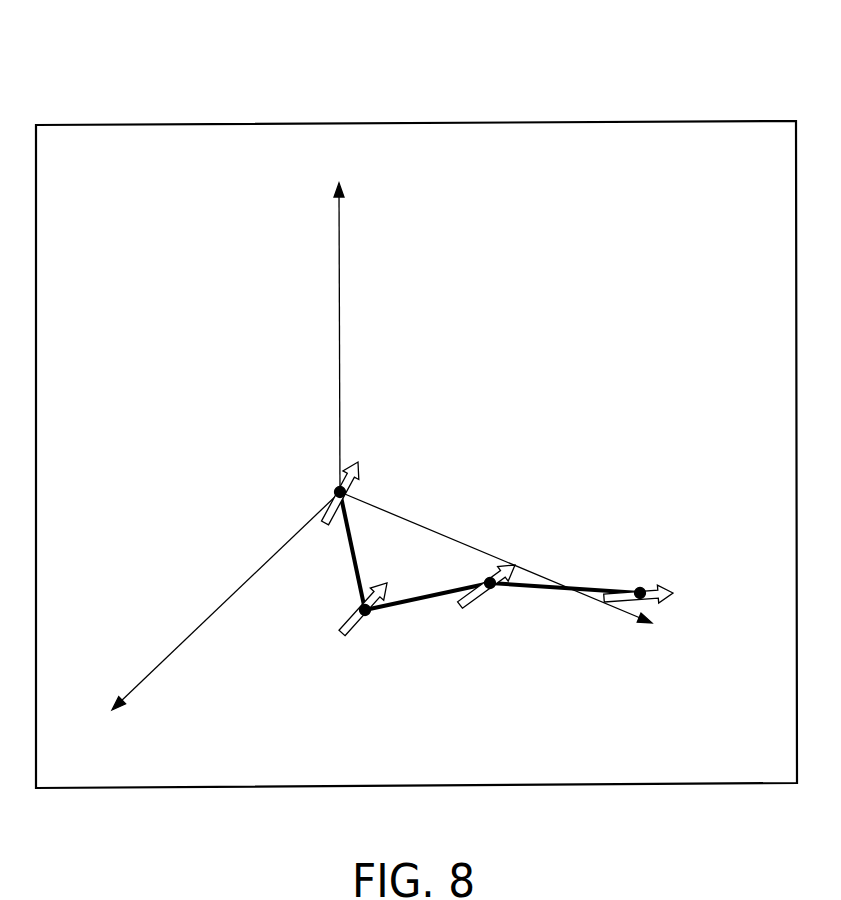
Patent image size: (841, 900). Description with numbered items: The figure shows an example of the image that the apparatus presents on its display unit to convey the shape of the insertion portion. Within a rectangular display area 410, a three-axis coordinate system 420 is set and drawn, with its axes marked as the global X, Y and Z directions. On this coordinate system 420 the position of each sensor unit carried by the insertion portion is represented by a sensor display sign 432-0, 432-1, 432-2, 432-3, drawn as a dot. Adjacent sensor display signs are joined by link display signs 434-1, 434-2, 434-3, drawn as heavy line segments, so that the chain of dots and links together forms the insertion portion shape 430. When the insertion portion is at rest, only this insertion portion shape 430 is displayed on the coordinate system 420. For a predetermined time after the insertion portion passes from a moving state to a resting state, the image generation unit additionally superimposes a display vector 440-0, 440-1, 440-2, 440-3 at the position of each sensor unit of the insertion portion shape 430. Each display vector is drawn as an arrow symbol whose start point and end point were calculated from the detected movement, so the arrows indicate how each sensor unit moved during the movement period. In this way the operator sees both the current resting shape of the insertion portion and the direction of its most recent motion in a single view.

The display area 410 is at (726, 100).
The coordinate system 420 is at (658, 290).
The insertion portion shape 430 is at (453, 604).
The sensor display sign 432-0 is at (334, 490).
The sensor display sign 432-1 is at (360, 610).
The sensor display sign 432-2 is at (492, 590).
The sensor display sign 432-3 is at (644, 589).
The link display sign 434-1 is at (355, 563).
The link display sign 434-2 is at (418, 598).
The link display sign 434-3 is at (586, 588).
The display vector 440-0 is at (360, 467).
The display vector 440-1 is at (342, 636).
The display vector 440-2 is at (537, 539).
The display vector 440-3 is at (676, 592).